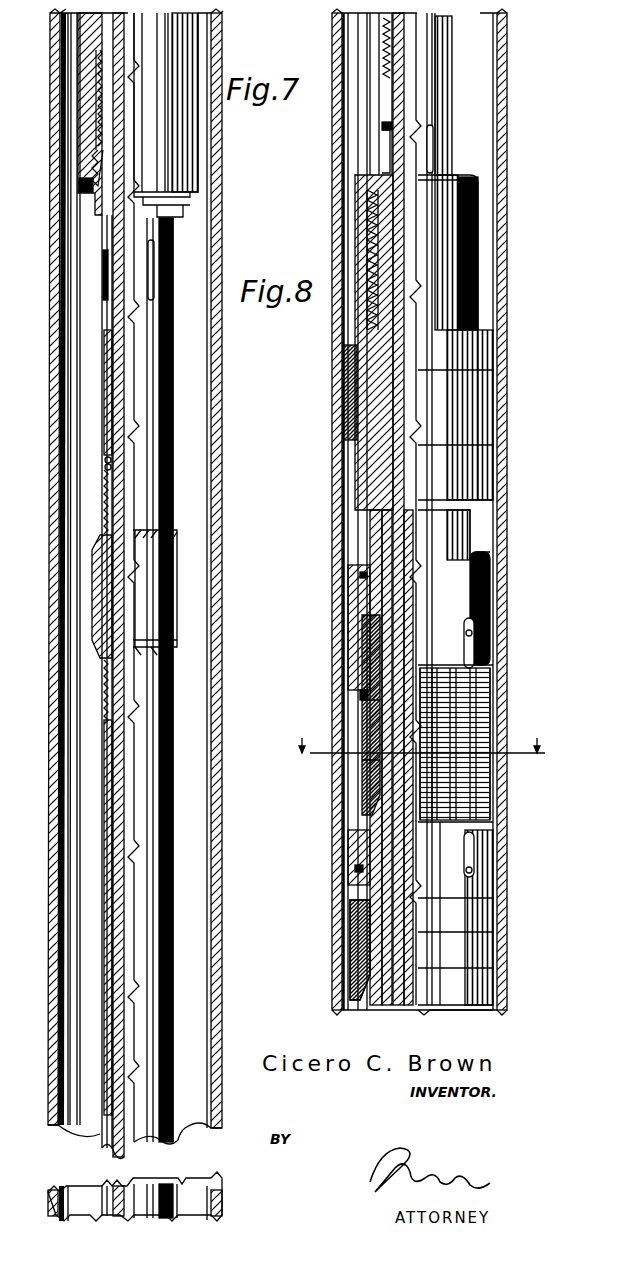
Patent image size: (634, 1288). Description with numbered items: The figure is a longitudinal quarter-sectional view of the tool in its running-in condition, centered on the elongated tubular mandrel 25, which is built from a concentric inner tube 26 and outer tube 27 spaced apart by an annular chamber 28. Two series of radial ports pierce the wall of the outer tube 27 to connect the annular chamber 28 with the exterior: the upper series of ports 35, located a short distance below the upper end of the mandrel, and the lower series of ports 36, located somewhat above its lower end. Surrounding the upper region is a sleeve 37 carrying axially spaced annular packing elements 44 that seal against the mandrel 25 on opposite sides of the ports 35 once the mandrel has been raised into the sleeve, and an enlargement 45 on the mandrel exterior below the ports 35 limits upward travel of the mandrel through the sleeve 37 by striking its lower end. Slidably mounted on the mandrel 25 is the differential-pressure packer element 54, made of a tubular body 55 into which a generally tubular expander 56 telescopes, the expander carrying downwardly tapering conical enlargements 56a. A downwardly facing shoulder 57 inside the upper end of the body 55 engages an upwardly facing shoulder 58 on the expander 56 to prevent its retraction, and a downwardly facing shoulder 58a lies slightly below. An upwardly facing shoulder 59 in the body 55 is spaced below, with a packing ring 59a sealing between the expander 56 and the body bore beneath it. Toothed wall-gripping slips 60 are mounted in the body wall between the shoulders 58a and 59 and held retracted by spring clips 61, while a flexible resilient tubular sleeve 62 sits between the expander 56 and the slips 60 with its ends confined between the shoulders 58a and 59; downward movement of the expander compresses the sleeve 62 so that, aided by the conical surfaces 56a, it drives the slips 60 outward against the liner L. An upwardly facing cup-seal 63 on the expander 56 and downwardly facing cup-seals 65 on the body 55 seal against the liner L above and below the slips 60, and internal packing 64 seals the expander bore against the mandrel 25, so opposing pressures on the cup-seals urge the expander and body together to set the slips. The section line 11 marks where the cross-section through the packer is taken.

In FIG. 8, the section line 11- 11 is at (421, 733).
In FIG. 7, the mandrel 25 is at (182, 383).
In FIG. 7, the inner tube 26 is at (119, 358).
In FIG. 8, the inner tube 26 is at (400, 108).
In FIG. 7, the outer tube 27 is at (113, 388).
In FIG. 8, the outer tube 27 is at (455, 40).
In FIG. 7, the annular chamber 28 is at (112, 410).
In FIG. 8, the annular chamber 28 is at (380, 557).
In FIG. 7, the upper series of radial ports 35 is at (106, 285).
In FIG. 8, the lower series of radial ports 36 is at (437, 141).
In FIG. 7, the sleeve 37 is at (199, 42).
In FIG. 7, the annular packing elements 44 is at (97, 78).
In FIG. 7, the enlargement 45 is at (96, 576).
In FIG. 8, the packer element 54 is at (487, 556).
In FIG. 8, the tubular body 55 is at (490, 579).
In FIG. 8, the expander 56 is at (480, 244).
In FIG. 8, the conical enlargements 56a is at (360, 679).
In FIG. 8, the downwardly facing shoulder 57 is at (365, 584).
In FIG. 8, the upwardly facing shoulder 58 is at (365, 601).
In FIG. 8, the downwardly facing shoulder 58a is at (368, 621).
In FIG. 8, the upwardly facing shoulder 59 is at (360, 869).
In FIG. 8, the packing ring 59a is at (368, 886).
In FIG. 8, the toothed wall-gripping slips 60 is at (480, 786).
In FIG. 8, the spring clips 61 is at (474, 661).
In FIG. 8, the tubular sleeve 62 is at (365, 691).
In FIG. 8, the cup-seal 63 is at (345, 369).
In FIG. 8, the internal packing 64 is at (370, 258).
In FIG. 8, the cup-seals 65 is at (350, 959).
In FIG. 7, the liner L is at (54, 622).
In FIG. 8, the liner L is at (503, 315).